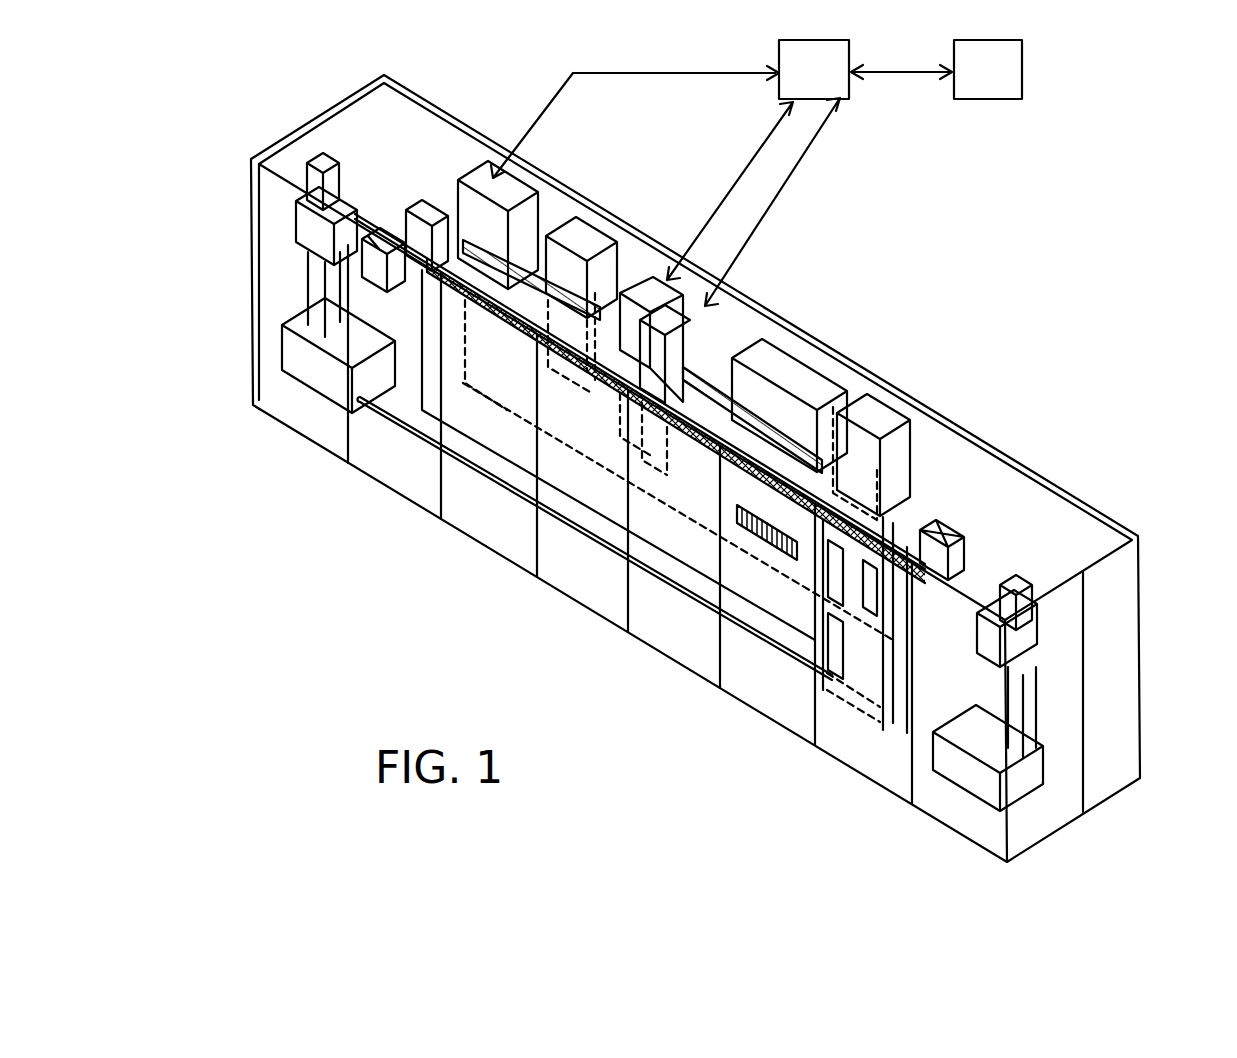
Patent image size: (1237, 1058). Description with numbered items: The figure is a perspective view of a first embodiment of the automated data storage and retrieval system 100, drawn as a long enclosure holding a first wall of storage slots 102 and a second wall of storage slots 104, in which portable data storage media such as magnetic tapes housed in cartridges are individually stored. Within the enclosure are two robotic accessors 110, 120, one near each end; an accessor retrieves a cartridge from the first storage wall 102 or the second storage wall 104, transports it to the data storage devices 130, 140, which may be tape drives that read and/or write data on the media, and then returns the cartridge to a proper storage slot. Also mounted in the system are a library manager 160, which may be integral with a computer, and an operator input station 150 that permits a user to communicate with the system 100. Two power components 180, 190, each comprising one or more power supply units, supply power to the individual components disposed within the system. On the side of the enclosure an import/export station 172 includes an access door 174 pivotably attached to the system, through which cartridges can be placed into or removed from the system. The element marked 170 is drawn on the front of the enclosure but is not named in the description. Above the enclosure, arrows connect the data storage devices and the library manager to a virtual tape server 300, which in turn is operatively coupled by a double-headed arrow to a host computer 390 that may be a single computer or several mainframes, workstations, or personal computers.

The automated data storage and retrieval system 100 is at (749, 779).
The first wall of storage slots 102 is at (543, 222).
The second wall of storage slots 104 is at (473, 427).
The accessor 110 is at (300, 236).
The accessor 120 is at (1035, 650).
The data storage device 130 is at (670, 275).
The data storage device 140 is at (720, 296).
The operator input station 150 is at (605, 232).
The library manager 160 is at (528, 190).
The rail 170 is at (575, 565).
The import/export station 172 is at (880, 660).
The access door 174 is at (848, 672).
The power component 180 is at (945, 522).
The power component 190 is at (917, 600).
The virtual tape server 300 is at (796, 84).
The host computer 390 is at (970, 84).